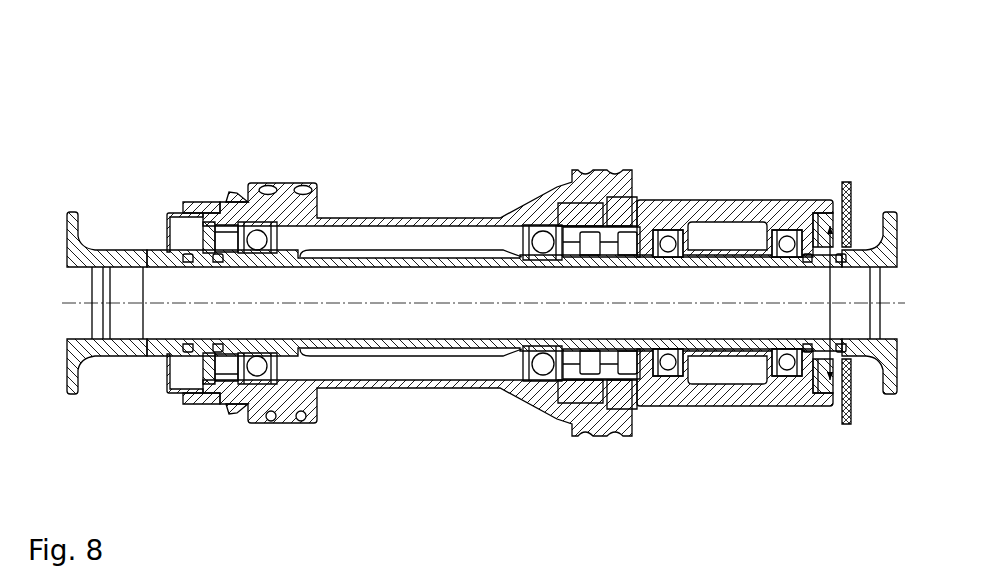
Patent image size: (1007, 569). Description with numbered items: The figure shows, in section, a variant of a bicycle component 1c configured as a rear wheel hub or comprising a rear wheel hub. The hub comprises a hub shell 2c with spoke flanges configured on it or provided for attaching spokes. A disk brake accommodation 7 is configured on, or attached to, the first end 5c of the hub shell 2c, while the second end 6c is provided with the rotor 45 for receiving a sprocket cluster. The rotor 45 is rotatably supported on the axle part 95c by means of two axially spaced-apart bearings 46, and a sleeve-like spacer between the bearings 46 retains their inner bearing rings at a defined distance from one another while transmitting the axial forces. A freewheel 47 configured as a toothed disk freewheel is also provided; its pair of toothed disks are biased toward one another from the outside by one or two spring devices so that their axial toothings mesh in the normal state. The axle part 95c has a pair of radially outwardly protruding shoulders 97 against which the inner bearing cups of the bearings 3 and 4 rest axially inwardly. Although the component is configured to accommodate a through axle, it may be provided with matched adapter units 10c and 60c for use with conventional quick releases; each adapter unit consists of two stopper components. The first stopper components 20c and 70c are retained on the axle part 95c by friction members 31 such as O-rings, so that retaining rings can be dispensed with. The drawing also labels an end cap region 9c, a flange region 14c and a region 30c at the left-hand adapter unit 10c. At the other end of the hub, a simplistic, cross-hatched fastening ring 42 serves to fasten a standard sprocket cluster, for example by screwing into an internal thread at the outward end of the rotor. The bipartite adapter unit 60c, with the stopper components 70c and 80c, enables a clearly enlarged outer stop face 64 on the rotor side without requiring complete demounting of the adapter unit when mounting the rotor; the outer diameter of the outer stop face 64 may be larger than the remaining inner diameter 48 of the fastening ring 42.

The bicycle component 1c is at (96, 61).
The hub shell 2c is at (418, 216).
The bearing 3 is at (246, 200).
The bearing 4 is at (523, 223).
The first end 5c is at (204, 112).
The second end 6c is at (621, 124).
The disk brake accommodation 7 is at (211, 175).
The end cap 9c is at (151, 222).
The adapter unit 10c is at (61, 211).
The axle flange 14c is at (62, 367).
The first stopper component 20c is at (213, 228).
The axle end flange 30c is at (76, 242).
The friction member 31 is at (187, 265).
The fastening ring 42 is at (851, 413).
The rotor 45 is at (651, 198).
The bearing 46 is at (788, 232).
The freewheel 47 is at (618, 278).
The remaining inner diameter 48 is at (835, 232).
The adapter unit 60c is at (901, 208).
The outer stop face 64 is at (900, 367).
The first stopper component 70c is at (808, 261).
The stopper component 80c is at (897, 247).
The axle part 95c is at (358, 264).
The shoulder 97 is at (433, 250).